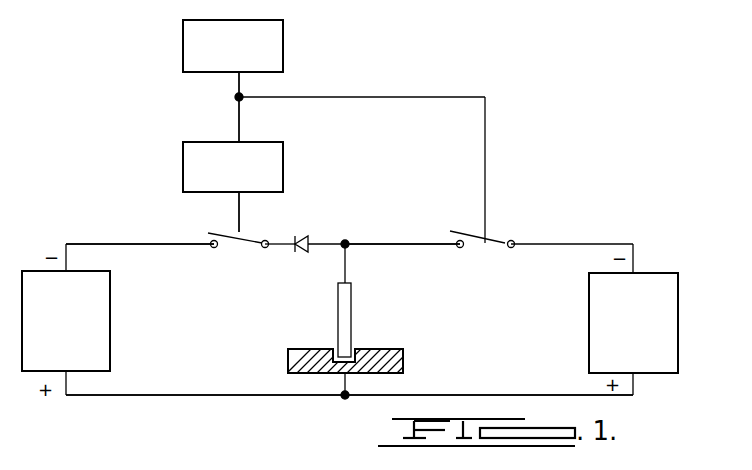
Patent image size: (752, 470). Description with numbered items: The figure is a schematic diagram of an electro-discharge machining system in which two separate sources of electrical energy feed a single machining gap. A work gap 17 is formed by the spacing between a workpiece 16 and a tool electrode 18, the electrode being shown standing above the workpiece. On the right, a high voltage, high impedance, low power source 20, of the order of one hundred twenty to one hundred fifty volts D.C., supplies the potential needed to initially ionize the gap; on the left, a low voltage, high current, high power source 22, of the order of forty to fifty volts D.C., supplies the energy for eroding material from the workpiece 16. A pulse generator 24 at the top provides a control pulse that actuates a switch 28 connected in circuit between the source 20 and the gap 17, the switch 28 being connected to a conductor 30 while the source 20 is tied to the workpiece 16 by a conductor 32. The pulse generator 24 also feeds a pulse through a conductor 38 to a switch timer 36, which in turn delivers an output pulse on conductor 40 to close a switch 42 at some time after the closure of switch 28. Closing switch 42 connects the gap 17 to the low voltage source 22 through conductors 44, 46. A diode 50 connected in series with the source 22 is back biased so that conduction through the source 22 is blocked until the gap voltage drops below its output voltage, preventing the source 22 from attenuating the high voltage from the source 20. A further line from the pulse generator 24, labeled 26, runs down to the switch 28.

The workpiece 16 is at (395, 358).
The work gap 17 is at (352, 347).
The tool electrode 18 is at (345, 300).
The high voltage, high impedance, low power source 20 is at (650, 280).
The low voltage, high current, high power source 22 is at (108, 316).
The pulse generator 24 is at (283, 60).
The connection line 26 is at (485, 150).
The switch 28 is at (493, 236).
The conductor 30 is at (387, 244).
The conductor 32 is at (527, 395).
The switch timer 36 is at (283, 170).
The conductor 38 is at (239, 125).
The conductor 40 is at (240, 232).
The switch 42 is at (215, 232).
The conductor 44 is at (92, 243).
The conductor 46 is at (158, 396).
The diode 50 is at (306, 240).